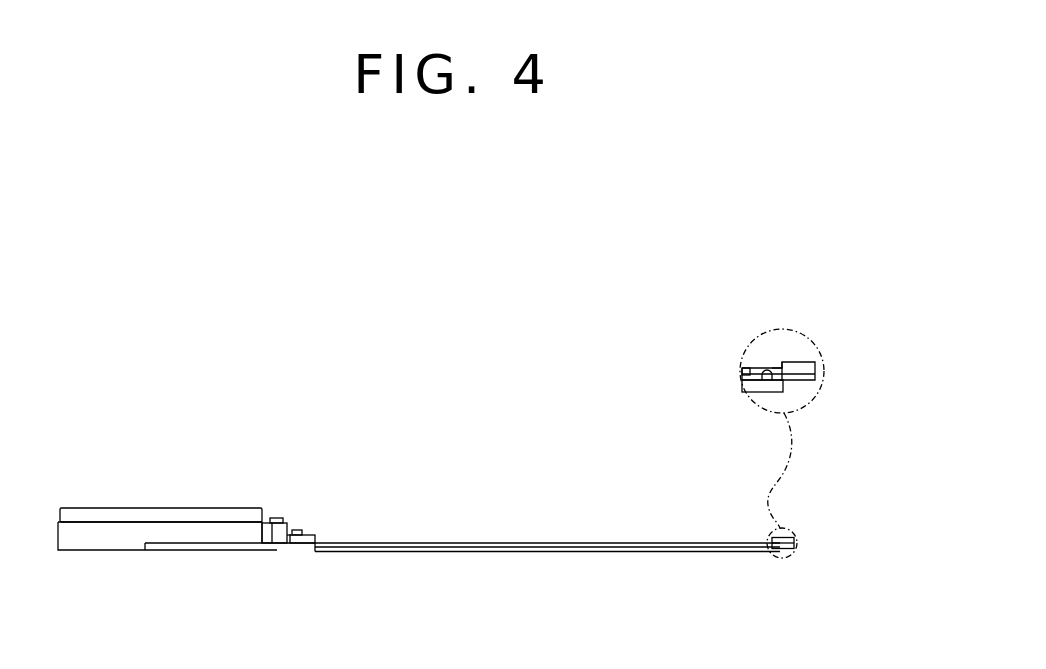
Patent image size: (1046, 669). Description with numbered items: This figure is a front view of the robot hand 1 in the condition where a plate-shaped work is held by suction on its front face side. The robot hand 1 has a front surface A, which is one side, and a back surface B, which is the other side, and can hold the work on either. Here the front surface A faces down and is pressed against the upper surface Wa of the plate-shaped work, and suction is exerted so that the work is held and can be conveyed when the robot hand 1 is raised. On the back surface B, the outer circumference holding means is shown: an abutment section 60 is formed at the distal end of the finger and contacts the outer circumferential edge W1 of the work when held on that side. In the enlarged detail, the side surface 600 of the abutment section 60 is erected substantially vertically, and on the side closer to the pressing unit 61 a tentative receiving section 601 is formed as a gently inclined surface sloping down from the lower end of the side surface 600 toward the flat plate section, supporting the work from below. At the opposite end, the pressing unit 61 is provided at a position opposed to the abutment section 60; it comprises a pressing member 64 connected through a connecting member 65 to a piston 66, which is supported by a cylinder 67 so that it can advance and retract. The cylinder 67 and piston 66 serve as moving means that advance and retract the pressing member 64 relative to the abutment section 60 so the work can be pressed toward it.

The robot hand 1 is at (390, 482).
The pressing unit 61 is at (213, 554).
The pressing member 64 is at (307, 550).
The connecting member 65 is at (279, 550).
The piston 66 is at (267, 523).
The cylinder 67 is at (194, 512).
The abutment section 60 is at (797, 362).
The side surface 600 is at (780, 366).
The tentative receiving section 601 is at (756, 366).
The outer circumferential edge W1 is at (766, 381).
The upper surface Wa is at (547, 543).
The front surface A is at (455, 553).
The back surface B is at (634, 543).